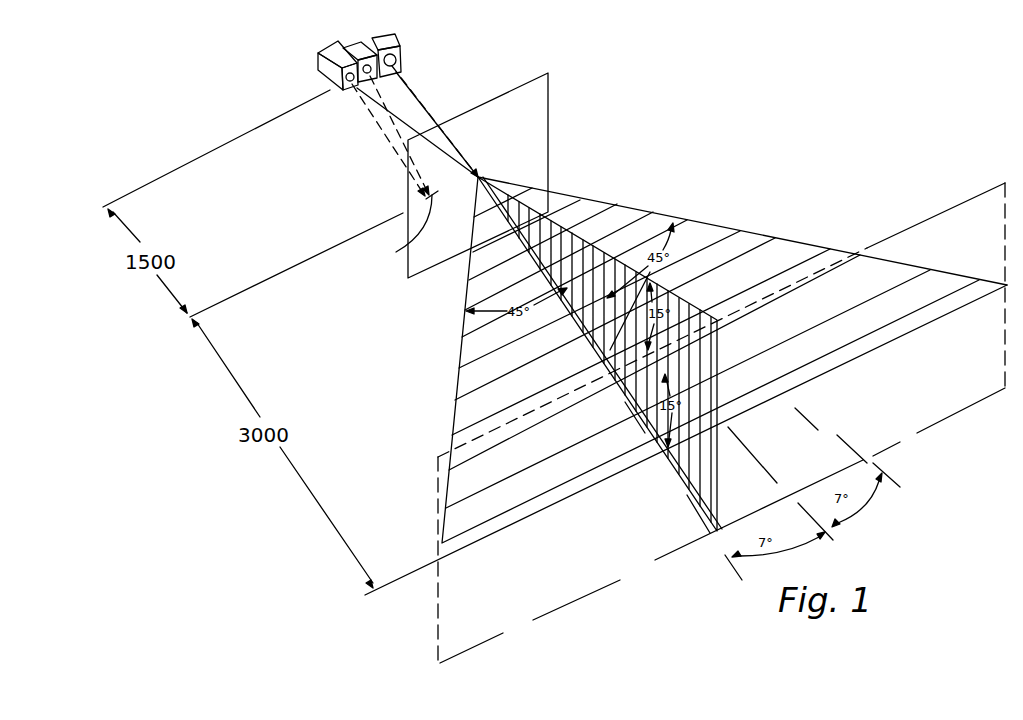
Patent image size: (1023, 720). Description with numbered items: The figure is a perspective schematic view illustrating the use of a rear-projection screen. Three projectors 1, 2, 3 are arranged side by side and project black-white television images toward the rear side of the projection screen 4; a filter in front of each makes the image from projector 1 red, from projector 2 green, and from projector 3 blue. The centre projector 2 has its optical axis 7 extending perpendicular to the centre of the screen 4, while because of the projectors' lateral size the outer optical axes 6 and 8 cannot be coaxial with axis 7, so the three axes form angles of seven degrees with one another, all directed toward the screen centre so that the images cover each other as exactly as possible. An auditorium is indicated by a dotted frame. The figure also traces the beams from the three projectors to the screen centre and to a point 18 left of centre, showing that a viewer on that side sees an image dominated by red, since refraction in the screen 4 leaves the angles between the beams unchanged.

The projector 1 is at (390, 45).
The projector 2 is at (400, 47).
The projector 3 is at (333, 72).
The projection screen 4 is at (552, 105).
The optical axis 6 is at (430, 100).
The optical axis 7 is at (402, 92).
The optical axis 8 is at (412, 128).
The point of the screen 18 is at (410, 238).